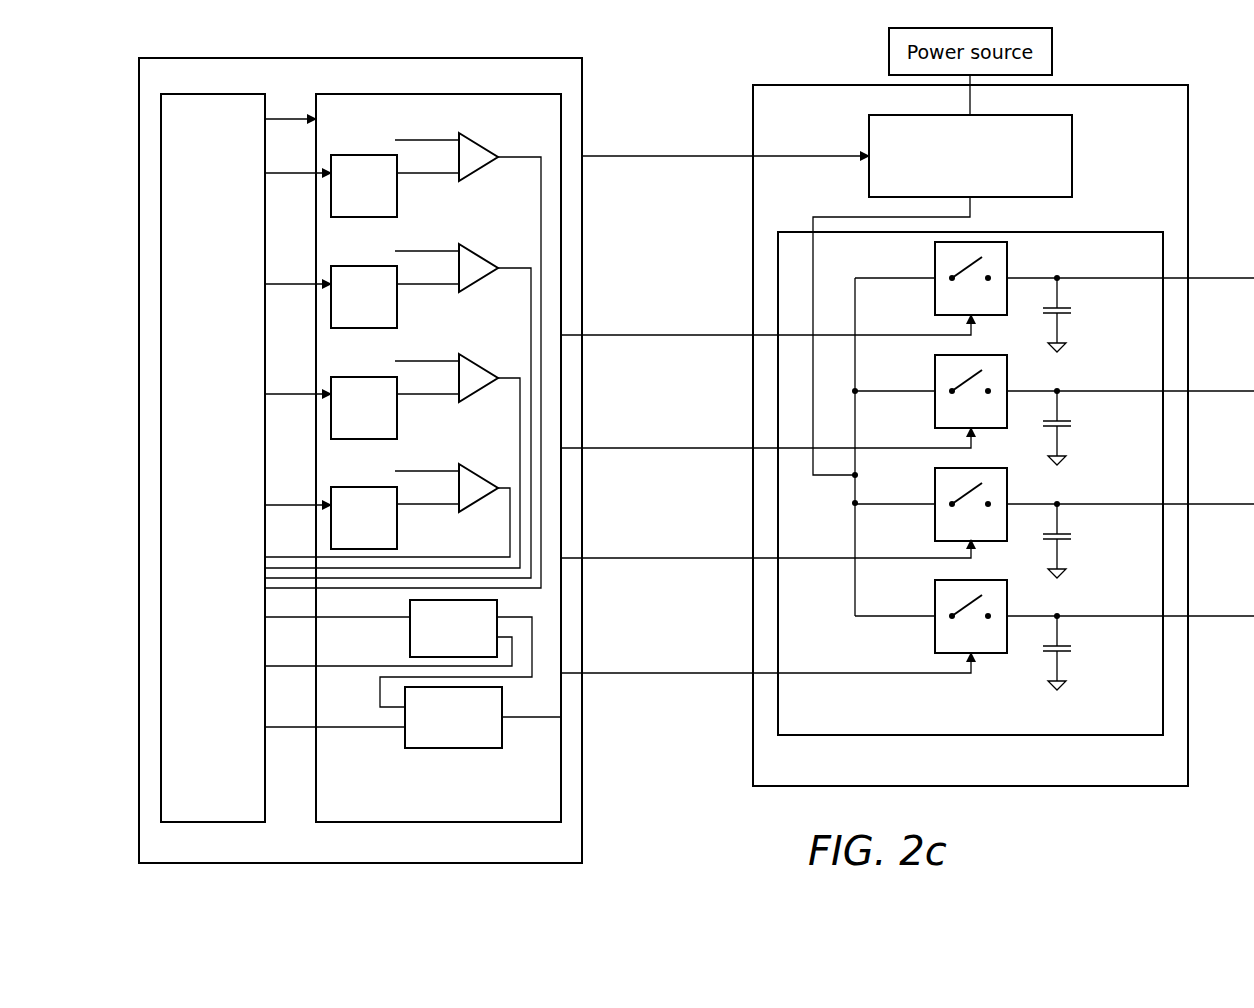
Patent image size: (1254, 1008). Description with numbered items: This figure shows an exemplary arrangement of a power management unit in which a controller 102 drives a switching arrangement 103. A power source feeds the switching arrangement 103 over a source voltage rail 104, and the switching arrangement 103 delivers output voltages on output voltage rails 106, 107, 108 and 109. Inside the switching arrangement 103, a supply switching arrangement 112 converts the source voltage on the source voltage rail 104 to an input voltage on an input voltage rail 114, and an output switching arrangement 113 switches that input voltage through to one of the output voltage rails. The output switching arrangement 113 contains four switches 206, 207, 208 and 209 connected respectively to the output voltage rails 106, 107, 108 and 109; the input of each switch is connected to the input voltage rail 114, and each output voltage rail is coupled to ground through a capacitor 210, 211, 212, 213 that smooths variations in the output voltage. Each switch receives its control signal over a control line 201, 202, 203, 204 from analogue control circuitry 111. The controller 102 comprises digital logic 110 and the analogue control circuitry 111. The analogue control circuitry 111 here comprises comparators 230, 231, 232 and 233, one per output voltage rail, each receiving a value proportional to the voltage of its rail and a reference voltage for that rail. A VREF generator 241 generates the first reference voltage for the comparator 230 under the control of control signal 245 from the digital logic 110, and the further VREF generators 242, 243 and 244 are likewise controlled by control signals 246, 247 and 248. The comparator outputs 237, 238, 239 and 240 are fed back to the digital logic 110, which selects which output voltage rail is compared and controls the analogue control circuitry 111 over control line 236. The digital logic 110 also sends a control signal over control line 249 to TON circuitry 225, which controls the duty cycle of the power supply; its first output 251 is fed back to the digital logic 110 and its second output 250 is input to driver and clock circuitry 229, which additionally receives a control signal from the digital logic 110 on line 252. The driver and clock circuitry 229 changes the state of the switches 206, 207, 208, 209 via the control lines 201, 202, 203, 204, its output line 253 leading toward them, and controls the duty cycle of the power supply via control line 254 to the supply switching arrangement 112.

The controller 102 is at (551, 55).
The switching arrangement 103 is at (1159, 84).
The source voltage rail 104 is at (972, 98).
The output voltage rail 106 is at (1228, 283).
The output voltage rail 107 is at (1228, 396).
The output voltage rail 108 is at (1228, 509).
The output voltage rail 109 is at (1228, 621).
The digital control circuitry 110 is at (161, 104).
The analogue control circuitry 111 is at (582, 108).
The supply switching arrangement 112 is at (1073, 125).
The output switching arrangement 113 is at (1133, 232).
The input voltage rail 114 is at (835, 215).
The control line 201 is at (686, 335).
The control line 202 is at (686, 447).
The control line 203 is at (686, 558).
The control line 204 is at (686, 673).
The switch 206 is at (934, 256).
The switch 207 is at (934, 369).
The switch 208 is at (934, 482).
The switch 209 is at (934, 594).
The capacitor 210 is at (1073, 310).
The capacitor 211 is at (1073, 423).
The capacitor 212 is at (1073, 536).
The capacitor 213 is at (1073, 648).
The T_ON circuitry 225 is at (497, 603).
The driver and clock circuitry 229 is at (502, 695).
The comparator 230 is at (470, 138).
The comparator 231 is at (470, 250).
The comparator 232 is at (470, 360).
The comparator 233 is at (470, 470).
The control line 236 is at (290, 116).
The comparator output 237 is at (541, 186).
The comparator output 238 is at (531, 296).
The comparator output 239 is at (520, 408).
The comparator output 240 is at (488, 555).
The V_REF generator 241 is at (398, 200).
The second reference voltage generator 242 is at (398, 310).
The third reference voltage generator 243 is at (398, 422).
The fourth reference voltage generator 244 is at (398, 532).
The control signal 245 is at (290, 177).
The control signal 246 is at (290, 288).
The control signal 247 is at (290, 398).
The control signal 248 is at (290, 509).
The control line 249 is at (343, 621).
The second output of T_ON circuitry 250 is at (532, 643).
The first output of T_ON circuitry 251 is at (343, 670).
The line 252 is at (343, 731).
The drivers output line 253 is at (534, 721).
The control line 254 is at (686, 154).